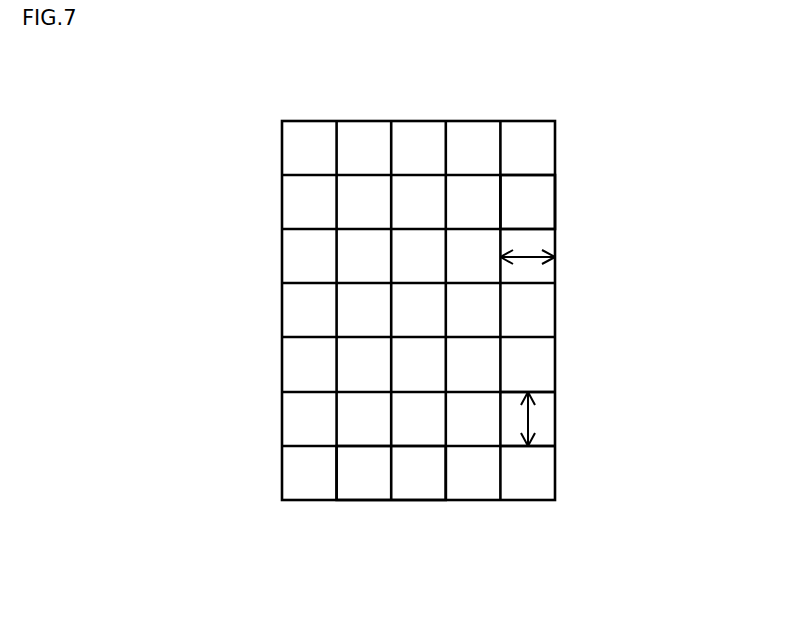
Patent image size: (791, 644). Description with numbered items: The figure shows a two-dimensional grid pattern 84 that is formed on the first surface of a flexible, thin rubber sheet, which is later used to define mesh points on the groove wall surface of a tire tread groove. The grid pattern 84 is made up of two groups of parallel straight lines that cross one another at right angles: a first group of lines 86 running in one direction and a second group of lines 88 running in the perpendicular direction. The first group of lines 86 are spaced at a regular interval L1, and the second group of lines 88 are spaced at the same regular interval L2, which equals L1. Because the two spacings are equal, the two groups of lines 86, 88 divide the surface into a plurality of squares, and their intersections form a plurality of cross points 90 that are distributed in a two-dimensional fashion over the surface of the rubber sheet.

The two-dimensional grid pattern 84 is at (598, 113).
The first group of lines 86 is at (502, 193).
The second group of lines 88 is at (515, 392).
The cross points 90 is at (382, 455).
The regular interval L1 is at (528, 252).
The regular interval L2 is at (528, 418).